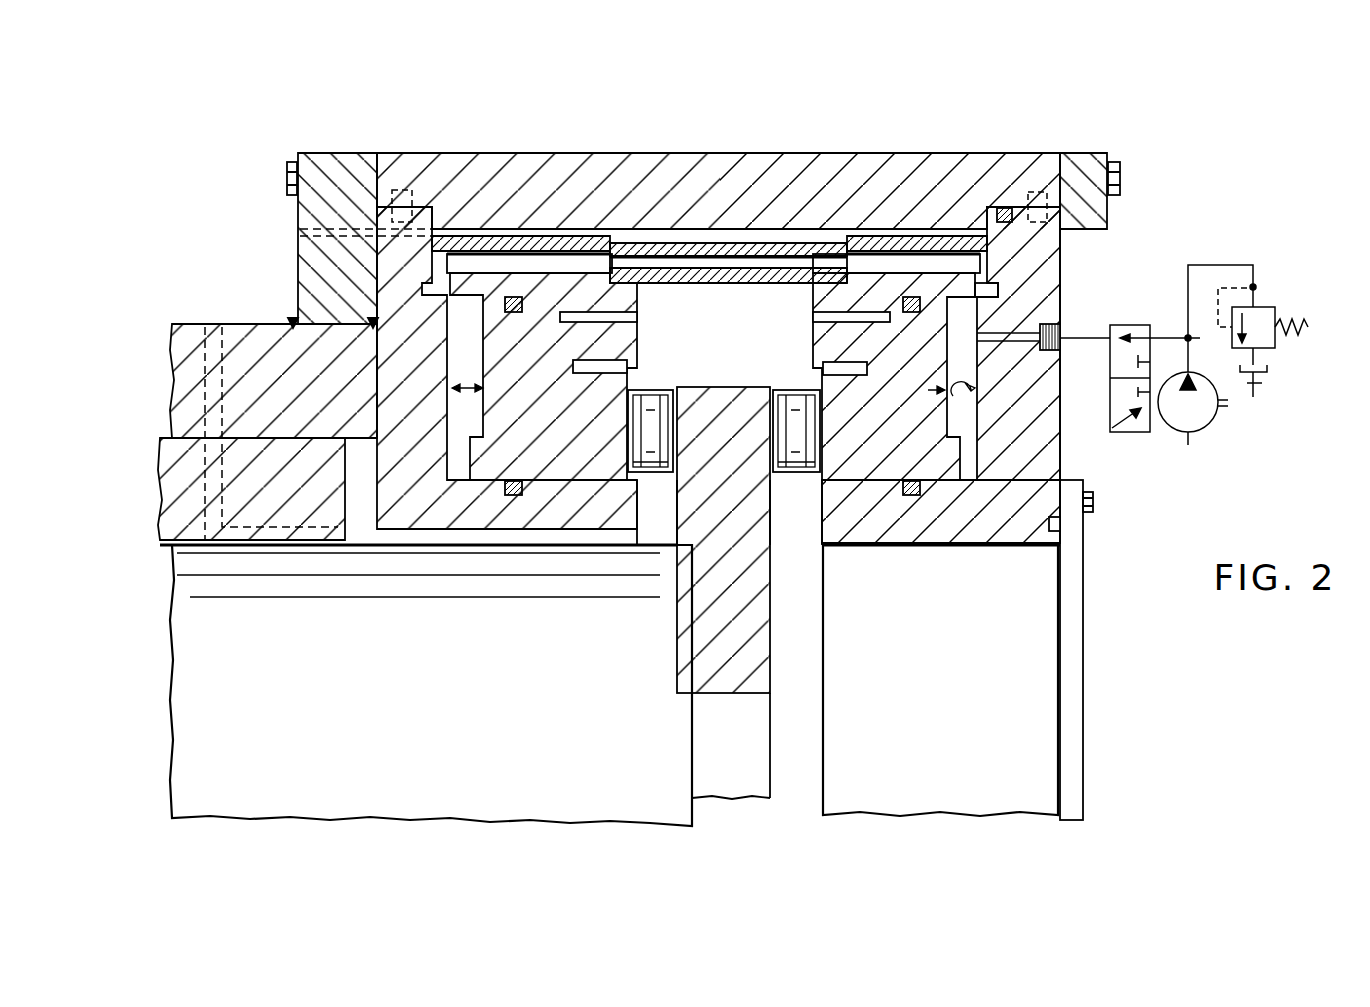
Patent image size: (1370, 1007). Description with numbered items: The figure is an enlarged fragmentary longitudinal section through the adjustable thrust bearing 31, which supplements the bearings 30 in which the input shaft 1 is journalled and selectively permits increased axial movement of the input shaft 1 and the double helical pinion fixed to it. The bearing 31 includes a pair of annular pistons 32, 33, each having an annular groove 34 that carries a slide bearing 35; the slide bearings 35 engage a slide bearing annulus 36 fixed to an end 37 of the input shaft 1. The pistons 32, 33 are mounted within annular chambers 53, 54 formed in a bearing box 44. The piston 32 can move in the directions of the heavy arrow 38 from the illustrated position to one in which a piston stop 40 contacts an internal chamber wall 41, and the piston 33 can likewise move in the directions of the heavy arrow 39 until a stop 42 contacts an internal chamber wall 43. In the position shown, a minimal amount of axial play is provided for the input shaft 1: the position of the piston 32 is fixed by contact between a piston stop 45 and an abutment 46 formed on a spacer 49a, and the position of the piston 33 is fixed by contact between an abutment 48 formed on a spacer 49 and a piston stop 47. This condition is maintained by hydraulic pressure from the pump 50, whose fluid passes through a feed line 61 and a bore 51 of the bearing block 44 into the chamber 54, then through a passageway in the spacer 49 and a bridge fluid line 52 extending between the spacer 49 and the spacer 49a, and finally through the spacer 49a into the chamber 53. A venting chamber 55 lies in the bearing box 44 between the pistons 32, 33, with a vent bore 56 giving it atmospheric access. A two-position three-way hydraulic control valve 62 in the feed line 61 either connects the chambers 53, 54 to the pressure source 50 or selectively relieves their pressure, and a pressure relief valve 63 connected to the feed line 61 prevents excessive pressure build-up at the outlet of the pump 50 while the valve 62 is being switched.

The input shaft 1 is at (493, 803).
The bearings 30 is at (255, 455).
The adjustable thrust bearing 31 is at (352, 104).
The annular piston 32 is at (598, 472).
The annular piston 33 is at (895, 473).
The annular groove 34 is at (640, 390).
The slide bearing 35 is at (651, 473).
The slide bearing annulus 36 is at (773, 665).
The end of the input shaft 37 is at (692, 755).
The heavy arrow 38 is at (478, 392).
The heavy arrow 39 is at (951, 399).
The piston stop 40 is at (492, 465).
The internal chamber wall 41 is at (455, 482).
The stop 42 is at (948, 470).
The internal chamber wall 43 is at (975, 470).
The bearing box 44 is at (727, 170).
The piston stop 45 is at (563, 365).
The abutment 46 is at (560, 320).
The piston stop 47 is at (880, 357).
The abutment 48 is at (880, 337).
The spacer 49 is at (893, 243).
The spacer 49a is at (498, 238).
The pump 50 is at (1215, 423).
The bore 51 is at (1062, 290).
The bridge fluid line 52 is at (685, 270).
The annular chamber 53 is at (470, 305).
The annular chamber 54 is at (953, 307).
The venting chamber 55 is at (727, 313).
The vent bore 56 is at (308, 237).
The feed line 61 is at (1090, 347).
The two-position three-way hydraulic control valve 62 is at (1126, 433).
The pressure relief valve 63 is at (1278, 305).